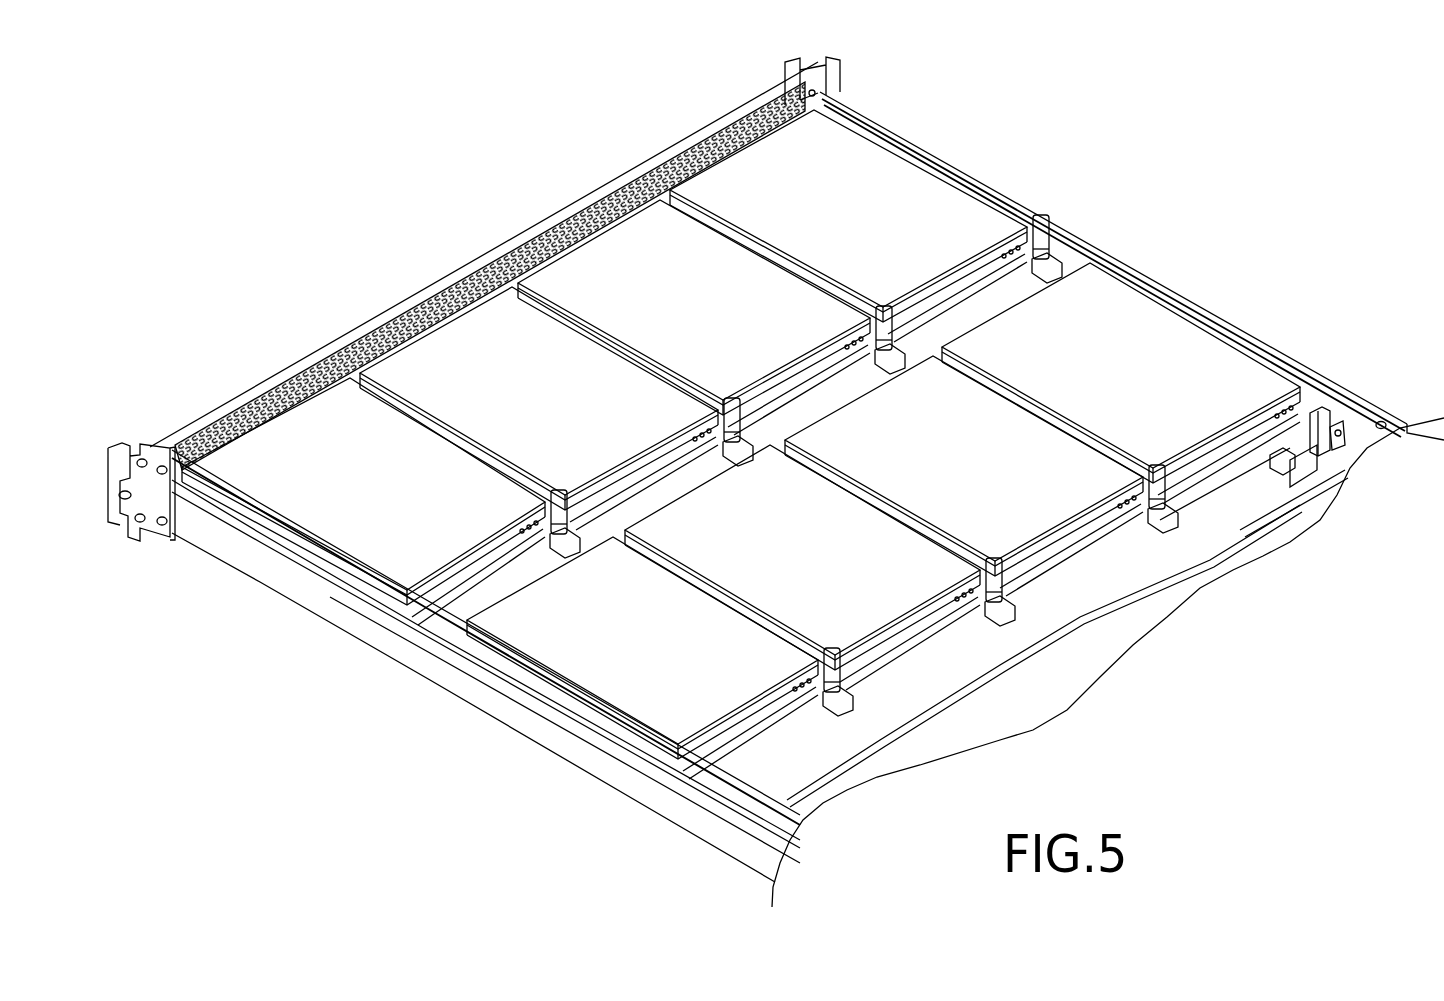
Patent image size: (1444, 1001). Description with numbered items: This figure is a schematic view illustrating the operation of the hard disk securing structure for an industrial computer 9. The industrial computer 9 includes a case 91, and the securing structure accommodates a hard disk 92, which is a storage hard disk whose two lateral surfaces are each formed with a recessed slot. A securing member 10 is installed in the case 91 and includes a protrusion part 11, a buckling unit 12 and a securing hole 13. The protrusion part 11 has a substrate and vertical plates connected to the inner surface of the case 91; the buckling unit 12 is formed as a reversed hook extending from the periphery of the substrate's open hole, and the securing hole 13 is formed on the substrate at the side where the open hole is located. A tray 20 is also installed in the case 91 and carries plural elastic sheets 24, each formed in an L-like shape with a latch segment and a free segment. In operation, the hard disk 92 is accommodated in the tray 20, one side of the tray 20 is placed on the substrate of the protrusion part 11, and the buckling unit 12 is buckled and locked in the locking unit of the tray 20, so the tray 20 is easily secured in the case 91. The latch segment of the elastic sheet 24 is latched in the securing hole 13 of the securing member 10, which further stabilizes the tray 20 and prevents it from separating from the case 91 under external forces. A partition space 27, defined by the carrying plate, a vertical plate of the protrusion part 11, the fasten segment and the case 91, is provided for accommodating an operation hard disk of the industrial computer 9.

The industrial computer 9 is at (1059, 91).
The securing member 10 is at (1212, 573).
The protrusion part 11 is at (1330, 480).
The buckling unit 12 is at (1285, 458).
The securing hole 13 is at (1290, 462).
The tray 20 is at (1322, 412).
The elastic sheet 24 is at (1322, 437).
The partition space 27 is at (1217, 490).
The case 91 is at (1080, 232).
The hard disk 92 is at (900, 183).